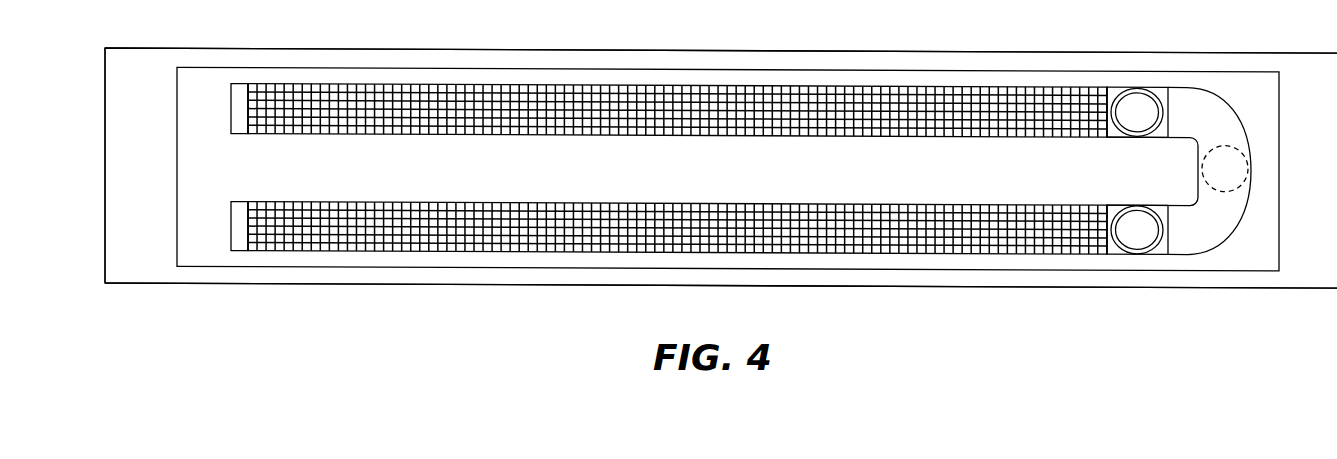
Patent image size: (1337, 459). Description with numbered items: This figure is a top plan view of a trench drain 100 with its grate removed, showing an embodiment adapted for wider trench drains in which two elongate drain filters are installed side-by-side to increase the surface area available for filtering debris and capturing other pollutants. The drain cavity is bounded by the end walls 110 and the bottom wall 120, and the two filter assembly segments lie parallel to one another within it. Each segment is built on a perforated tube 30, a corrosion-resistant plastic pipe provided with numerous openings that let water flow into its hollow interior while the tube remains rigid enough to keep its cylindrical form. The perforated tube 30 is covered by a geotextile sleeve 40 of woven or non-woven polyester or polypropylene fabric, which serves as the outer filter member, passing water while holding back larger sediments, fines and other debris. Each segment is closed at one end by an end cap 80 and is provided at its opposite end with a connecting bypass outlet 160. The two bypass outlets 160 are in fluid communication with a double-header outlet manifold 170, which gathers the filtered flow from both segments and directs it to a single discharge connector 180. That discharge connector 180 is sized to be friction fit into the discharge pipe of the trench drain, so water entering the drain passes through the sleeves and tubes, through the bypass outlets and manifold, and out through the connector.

The perforated tube 30 is at (532, 90).
The geotextile sleeve 40 is at (447, 86).
The end cap 80 is at (239, 92).
The trench drain 100 is at (389, 336).
The end walls 110 is at (122, 181).
The bottom wall 120 is at (213, 176).
The connecting bypass outlet 160 is at (1138, 103).
The double-header outlet manifold 170 is at (1209, 232).
The discharge connector 180 is at (1223, 145).